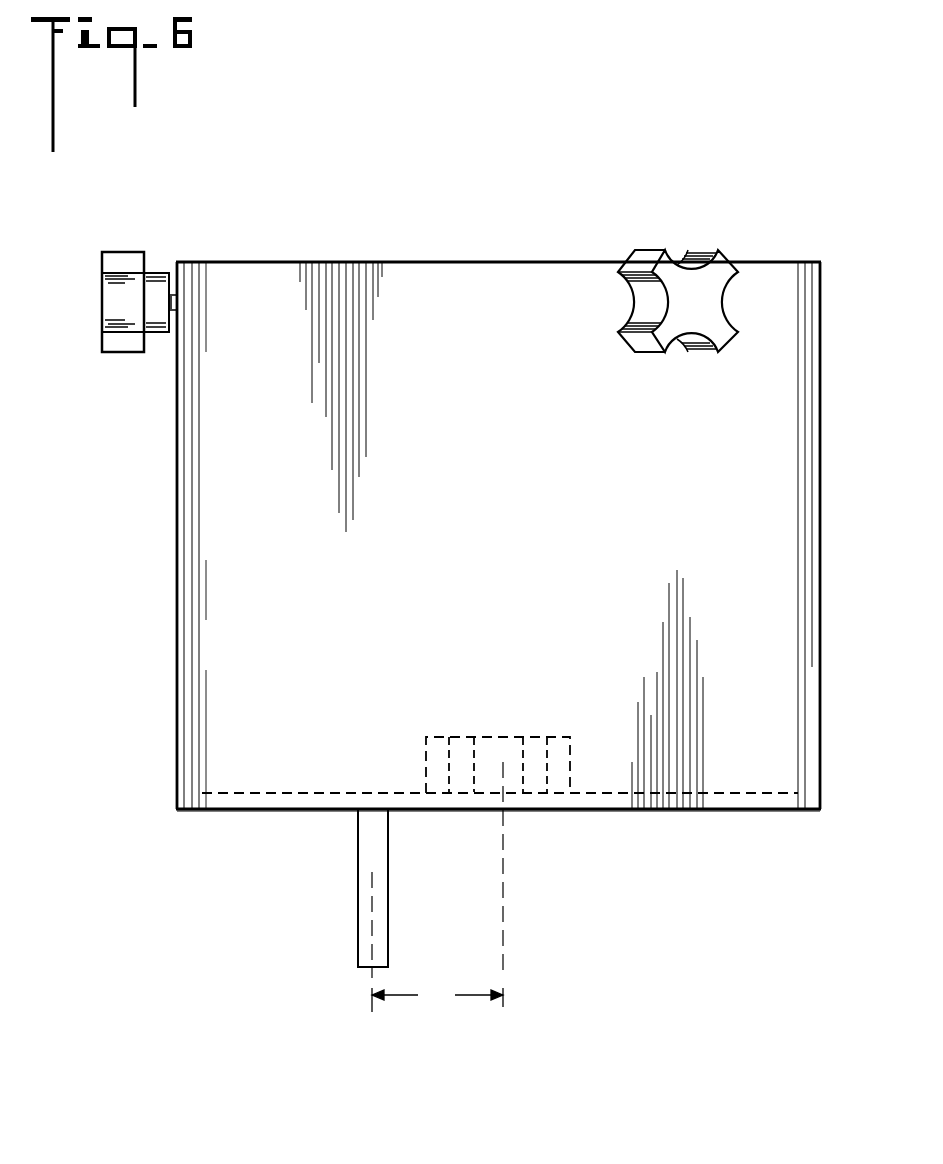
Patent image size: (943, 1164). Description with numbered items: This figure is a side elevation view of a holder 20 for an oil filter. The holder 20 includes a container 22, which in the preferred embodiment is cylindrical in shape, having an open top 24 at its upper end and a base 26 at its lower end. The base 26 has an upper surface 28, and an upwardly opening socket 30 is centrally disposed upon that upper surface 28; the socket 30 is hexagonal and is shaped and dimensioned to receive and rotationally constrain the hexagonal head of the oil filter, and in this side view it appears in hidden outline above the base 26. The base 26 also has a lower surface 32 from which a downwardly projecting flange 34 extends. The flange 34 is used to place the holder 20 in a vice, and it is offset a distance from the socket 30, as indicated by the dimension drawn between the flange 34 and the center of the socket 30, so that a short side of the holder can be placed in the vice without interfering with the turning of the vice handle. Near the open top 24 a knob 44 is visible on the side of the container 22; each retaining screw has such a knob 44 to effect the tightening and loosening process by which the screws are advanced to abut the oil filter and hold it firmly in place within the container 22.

The holder 20 is at (760, 152).
The container 22 is at (177, 613).
The open top 24 is at (467, 262).
The base 26 is at (710, 800).
The upper surface 28 is at (238, 792).
The socket 30 is at (490, 746).
The lower surface 32 is at (260, 810).
The flange 34 is at (358, 936).
The knob 44 is at (648, 249).